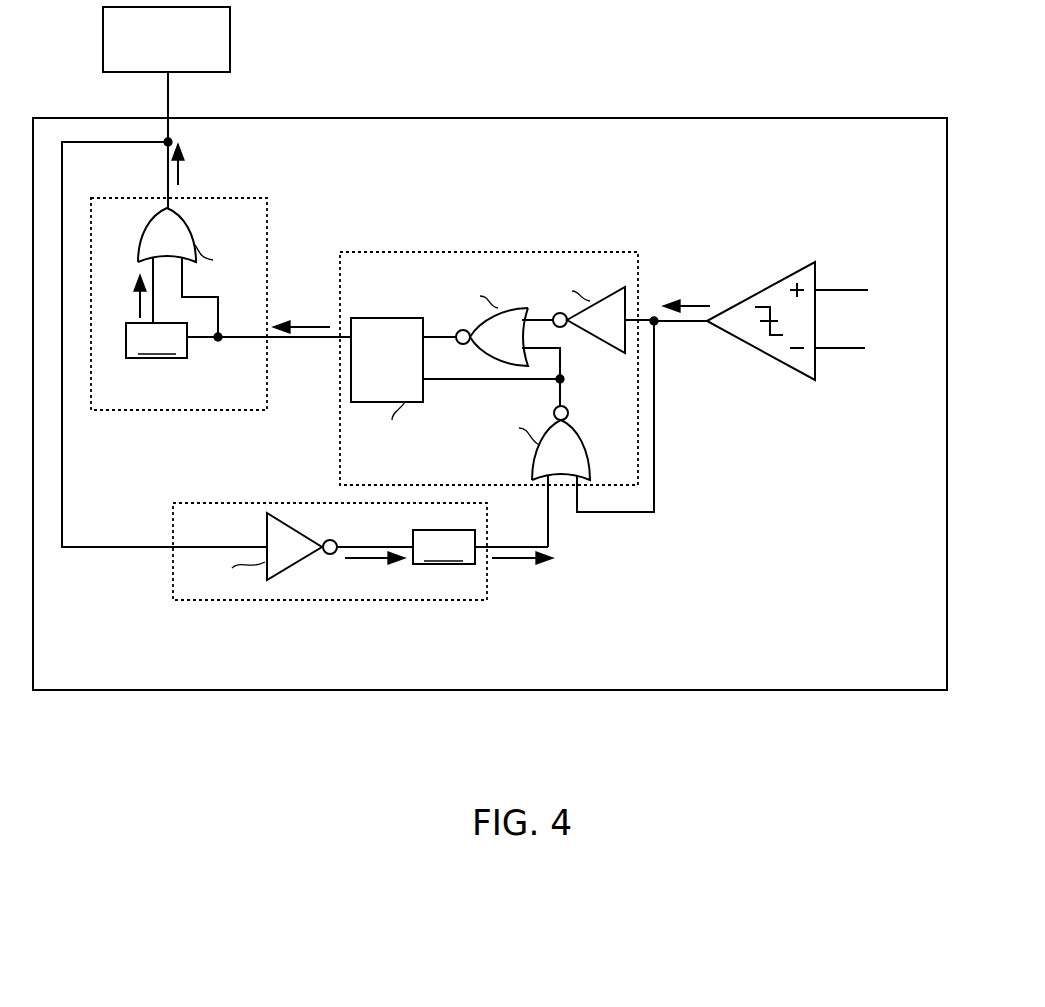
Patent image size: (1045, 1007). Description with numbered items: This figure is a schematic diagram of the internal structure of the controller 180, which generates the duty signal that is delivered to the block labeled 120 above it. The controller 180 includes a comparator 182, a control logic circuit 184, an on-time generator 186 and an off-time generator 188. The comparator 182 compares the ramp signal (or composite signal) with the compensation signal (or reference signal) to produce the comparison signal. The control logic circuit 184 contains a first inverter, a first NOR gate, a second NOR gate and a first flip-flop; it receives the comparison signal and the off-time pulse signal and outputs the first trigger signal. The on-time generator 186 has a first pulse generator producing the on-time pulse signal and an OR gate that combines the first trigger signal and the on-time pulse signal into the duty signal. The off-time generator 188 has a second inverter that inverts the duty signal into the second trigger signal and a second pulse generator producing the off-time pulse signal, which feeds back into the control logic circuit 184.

The power stage / switching circuit 120 is at (186, 51).
The controller 180 is at (838, 118).
The comparator 182 is at (785, 272).
The control logic circuit 184 is at (565, 252).
The on-time generator 186 is at (267, 232).
The off-time generator 188 is at (352, 602).